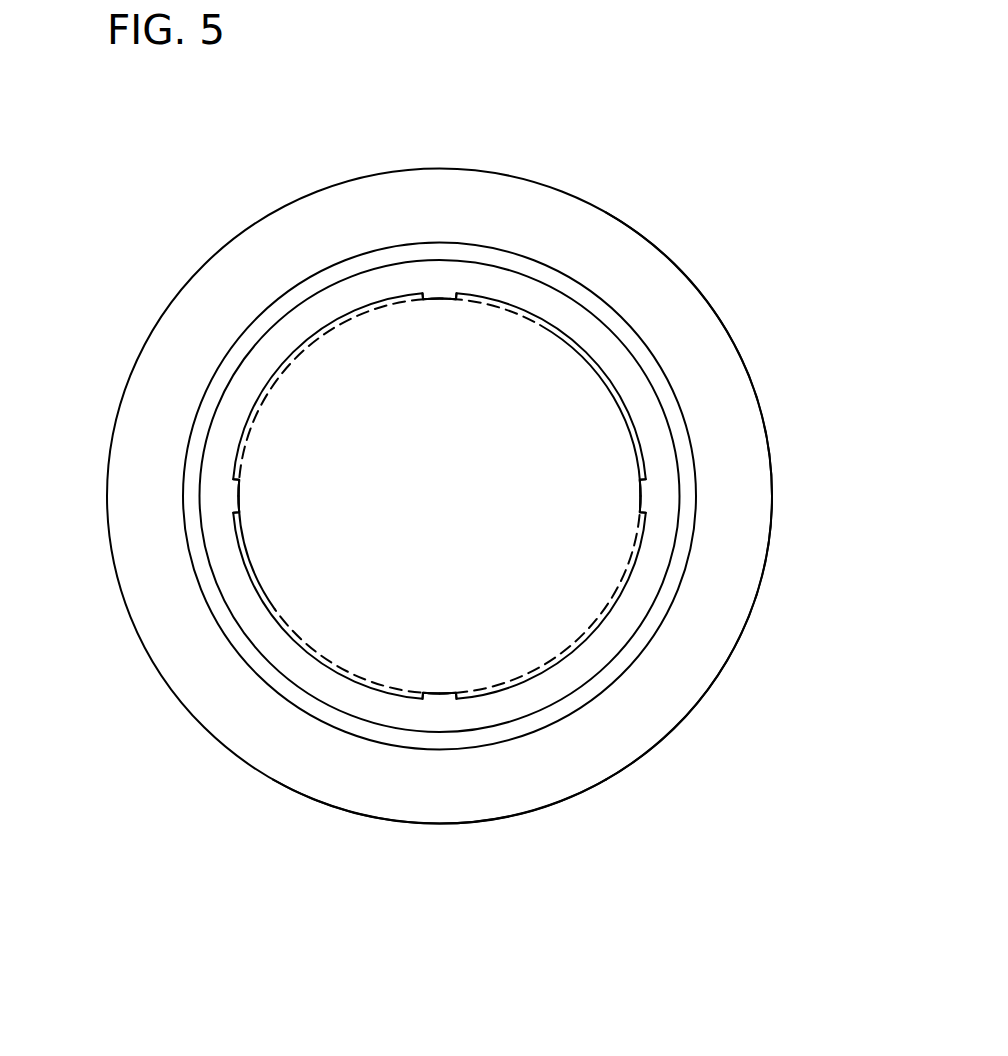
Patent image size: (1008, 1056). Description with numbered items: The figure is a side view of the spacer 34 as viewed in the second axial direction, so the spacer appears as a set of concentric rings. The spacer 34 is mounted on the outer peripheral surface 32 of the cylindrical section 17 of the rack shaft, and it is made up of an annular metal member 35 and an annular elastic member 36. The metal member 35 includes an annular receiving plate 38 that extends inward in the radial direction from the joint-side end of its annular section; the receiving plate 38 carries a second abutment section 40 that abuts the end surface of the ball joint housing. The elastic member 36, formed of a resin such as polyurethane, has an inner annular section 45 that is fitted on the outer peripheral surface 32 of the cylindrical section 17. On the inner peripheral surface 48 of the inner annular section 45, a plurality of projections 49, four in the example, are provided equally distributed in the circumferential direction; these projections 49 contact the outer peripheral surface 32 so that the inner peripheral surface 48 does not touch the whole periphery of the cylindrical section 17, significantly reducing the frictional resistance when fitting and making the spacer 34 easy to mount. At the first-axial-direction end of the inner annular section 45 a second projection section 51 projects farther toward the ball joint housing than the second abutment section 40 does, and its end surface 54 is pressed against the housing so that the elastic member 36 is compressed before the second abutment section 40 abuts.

The cylindrical section 17 is at (563, 337).
The outer peripheral surface 32 is at (590, 368).
The spacer 34 is at (480, 140).
The annular metal member 35 is at (553, 803).
The annular elastic member 36 is at (257, 592).
The annular receiving plate 38 is at (770, 455).
The second abutment section 40 is at (708, 663).
The inner annular section 45 is at (343, 680).
The inner peripheral surface 48 is at (605, 617).
The projections 49 is at (435, 302).
The second projection section 51 is at (248, 352).
The end surface 54 is at (218, 437).